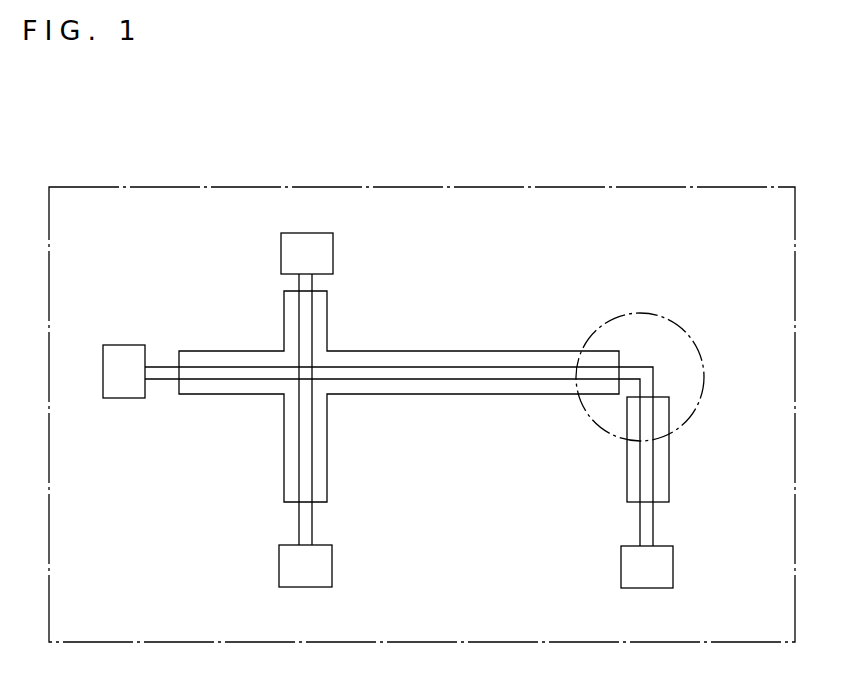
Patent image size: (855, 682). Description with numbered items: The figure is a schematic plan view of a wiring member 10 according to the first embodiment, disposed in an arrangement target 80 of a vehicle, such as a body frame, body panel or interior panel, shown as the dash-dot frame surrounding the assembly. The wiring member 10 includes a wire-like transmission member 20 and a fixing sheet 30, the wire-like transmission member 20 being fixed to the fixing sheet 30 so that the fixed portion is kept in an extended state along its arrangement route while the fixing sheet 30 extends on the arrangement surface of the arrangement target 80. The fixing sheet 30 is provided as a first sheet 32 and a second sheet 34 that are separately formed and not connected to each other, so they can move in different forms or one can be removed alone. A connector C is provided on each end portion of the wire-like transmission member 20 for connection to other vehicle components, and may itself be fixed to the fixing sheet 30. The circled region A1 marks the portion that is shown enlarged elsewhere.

The wiring member 10 is at (226, 258).
The wire-like transmission member 20 is at (640, 377).
The fixing sheet 30 is at (407, 410).
The first sheet 32 is at (517, 394).
The second sheet 34 is at (630, 449).
The arrangement target 80 is at (484, 187).
The region A1 is at (688, 423).
The connector C is at (318, 258).